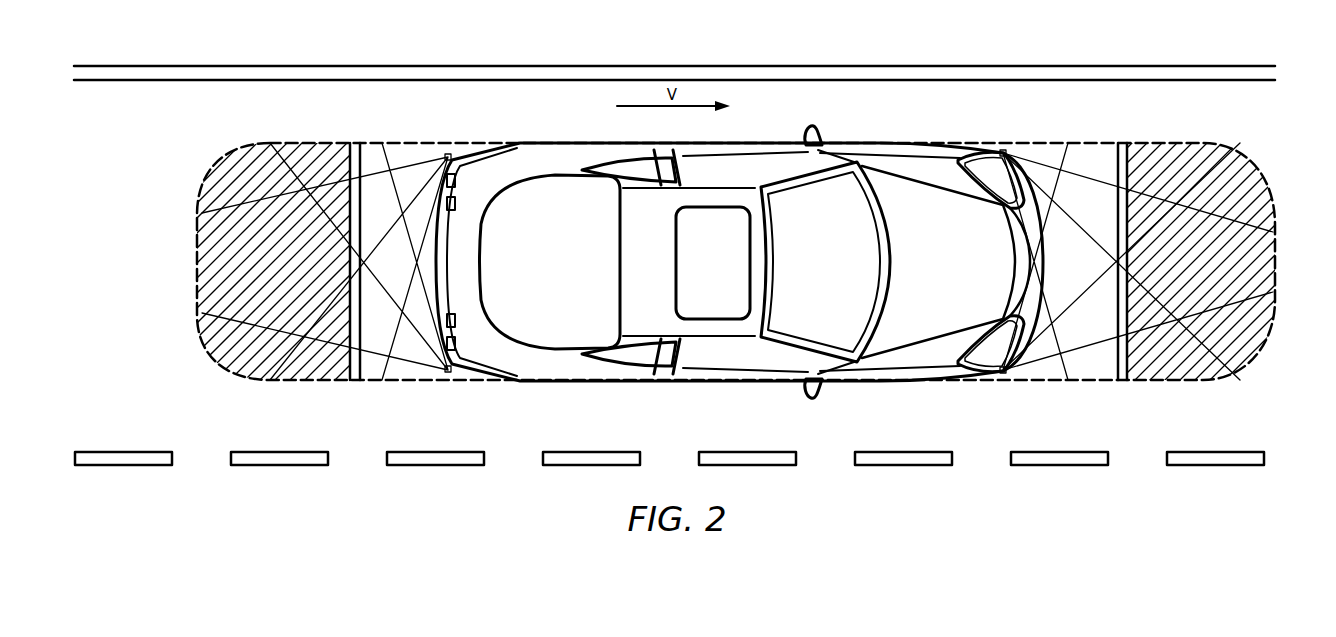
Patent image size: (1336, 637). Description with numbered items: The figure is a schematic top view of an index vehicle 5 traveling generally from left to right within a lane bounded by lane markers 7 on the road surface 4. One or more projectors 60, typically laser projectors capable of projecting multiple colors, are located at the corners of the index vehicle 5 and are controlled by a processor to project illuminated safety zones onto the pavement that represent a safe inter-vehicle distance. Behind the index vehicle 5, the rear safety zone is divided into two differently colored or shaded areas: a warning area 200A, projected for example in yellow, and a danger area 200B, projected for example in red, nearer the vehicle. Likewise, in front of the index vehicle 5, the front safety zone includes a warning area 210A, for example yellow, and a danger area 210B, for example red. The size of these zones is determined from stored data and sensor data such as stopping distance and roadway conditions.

The road surface 4 is at (1254, 409).
The index vehicle 5 is at (655, 270).
The lane markers 7 is at (956, 73).
The projectors 60 is at (450, 154).
The warning area 200A is at (238, 170).
The danger area 200B is at (395, 172).
The warning area 210A is at (1240, 196).
The danger area 210B is at (1073, 182).